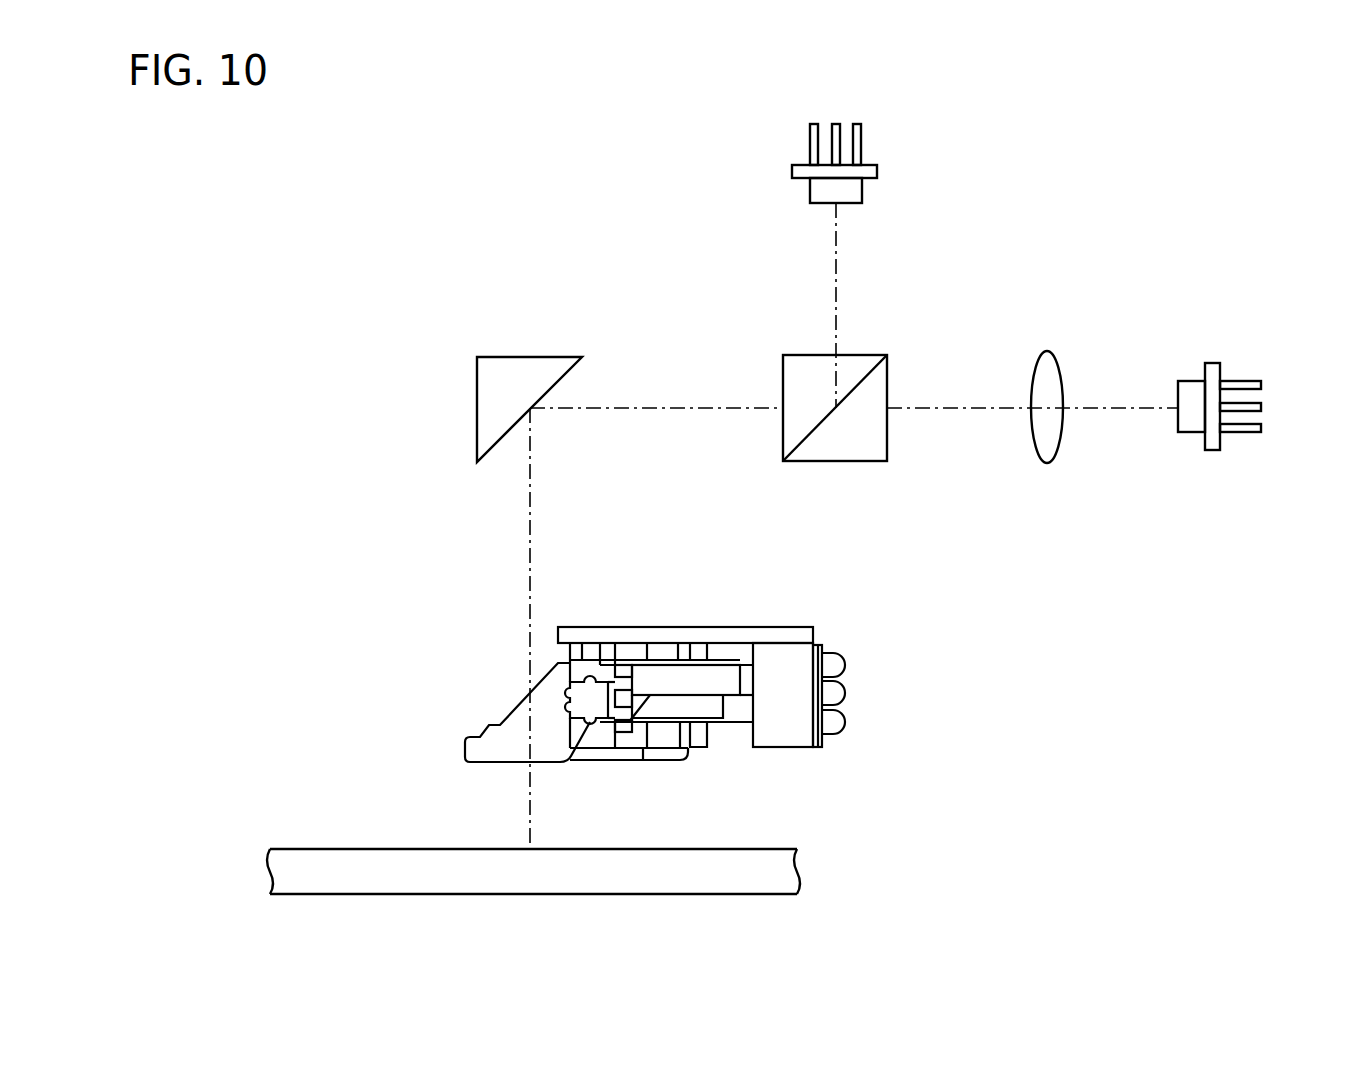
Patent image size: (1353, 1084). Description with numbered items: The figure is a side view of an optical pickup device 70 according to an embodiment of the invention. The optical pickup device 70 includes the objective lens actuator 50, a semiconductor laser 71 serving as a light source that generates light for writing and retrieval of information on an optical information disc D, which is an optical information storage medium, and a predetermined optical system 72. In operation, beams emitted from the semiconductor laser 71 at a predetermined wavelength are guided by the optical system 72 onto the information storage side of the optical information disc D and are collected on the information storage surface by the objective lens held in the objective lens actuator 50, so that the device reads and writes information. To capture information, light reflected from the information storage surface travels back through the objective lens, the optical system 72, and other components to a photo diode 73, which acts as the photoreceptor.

The optical pickup device 70 is at (1264, 170).
The semiconductor laser 71 is at (1212, 363).
The optical system 72 is at (598, 326).
The photo diode 73 is at (877, 170).
The objective lens actuator 50 is at (841, 737).
The optical information disc D is at (386, 880).